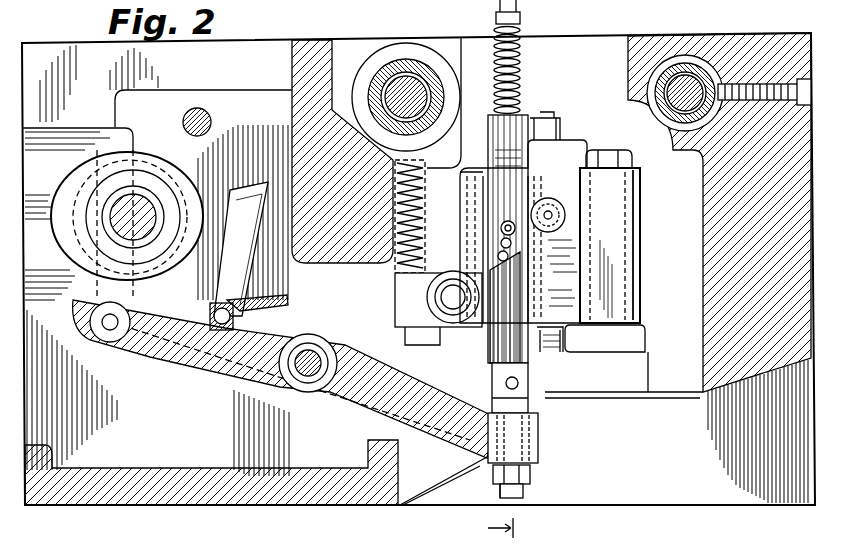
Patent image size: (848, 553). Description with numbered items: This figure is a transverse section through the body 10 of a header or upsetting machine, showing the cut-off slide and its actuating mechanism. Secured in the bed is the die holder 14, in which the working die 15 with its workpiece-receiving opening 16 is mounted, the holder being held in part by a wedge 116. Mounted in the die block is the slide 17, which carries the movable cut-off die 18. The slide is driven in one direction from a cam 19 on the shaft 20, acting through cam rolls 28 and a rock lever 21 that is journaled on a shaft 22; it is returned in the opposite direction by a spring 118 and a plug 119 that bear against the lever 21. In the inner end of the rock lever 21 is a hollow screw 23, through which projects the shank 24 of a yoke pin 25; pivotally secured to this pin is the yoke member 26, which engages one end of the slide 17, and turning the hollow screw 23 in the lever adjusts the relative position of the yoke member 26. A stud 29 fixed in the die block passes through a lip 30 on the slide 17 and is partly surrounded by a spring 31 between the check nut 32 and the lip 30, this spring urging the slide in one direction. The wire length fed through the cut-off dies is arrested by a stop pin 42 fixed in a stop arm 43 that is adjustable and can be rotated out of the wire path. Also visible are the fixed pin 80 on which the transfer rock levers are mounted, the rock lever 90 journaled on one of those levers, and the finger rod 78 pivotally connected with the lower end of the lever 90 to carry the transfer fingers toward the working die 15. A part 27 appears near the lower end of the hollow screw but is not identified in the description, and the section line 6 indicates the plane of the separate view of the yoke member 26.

The body 10 is at (742, 36).
The fixed pin 80 is at (197, 108).
The cam 19 is at (56, 182).
The shaft 20 is at (120, 212).
The rock lever 21 is at (200, 372).
The shaft 22 is at (312, 340).
The hollow screw 23 is at (536, 462).
The shank 24 is at (530, 496).
The yoke pin 25 is at (560, 406).
The yoke member 26 is at (529, 384).
The lock nut 27 is at (498, 496).
The cam rolls 28 is at (100, 345).
The stud 29 is at (498, 4).
The lip 30 is at (488, 140).
The spring 31 is at (523, 33).
The check nut 32 is at (521, 16).
The die holder 14 is at (565, 163).
The working die 15 is at (556, 232).
The opening 16 is at (550, 214).
The slide 17 is at (514, 290).
The cut-off die 18 is at (500, 226).
The stop pin 42 is at (500, 242).
The stop arm 43 is at (497, 256).
The finger rod 78 is at (286, 297).
The rock lever 90 is at (248, 238).
The wedge 116 is at (626, 255).
The spring 118 is at (395, 273).
The plug 119 is at (395, 330).
The section line 6 is at (508, 529).